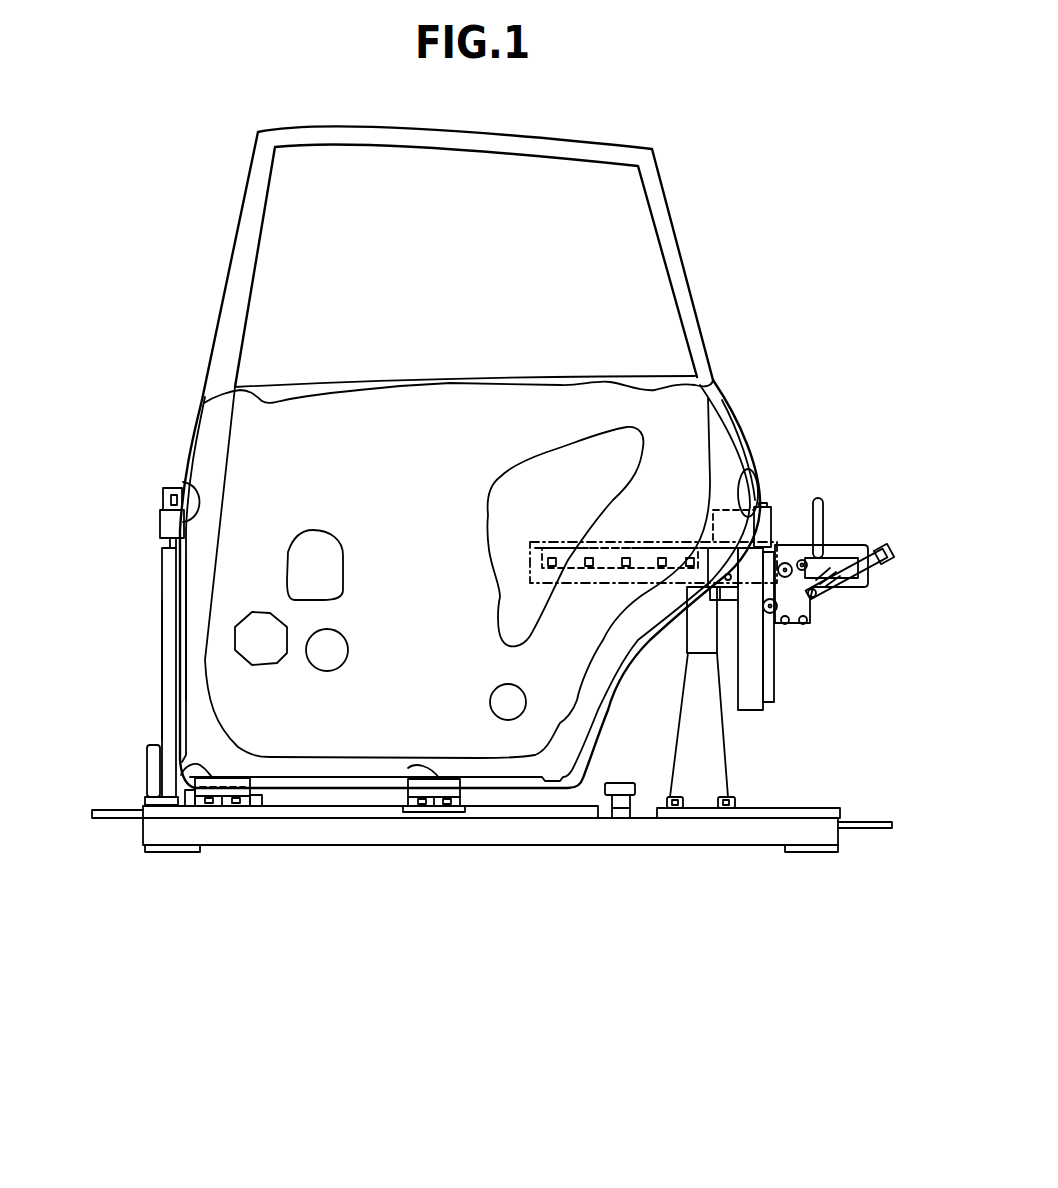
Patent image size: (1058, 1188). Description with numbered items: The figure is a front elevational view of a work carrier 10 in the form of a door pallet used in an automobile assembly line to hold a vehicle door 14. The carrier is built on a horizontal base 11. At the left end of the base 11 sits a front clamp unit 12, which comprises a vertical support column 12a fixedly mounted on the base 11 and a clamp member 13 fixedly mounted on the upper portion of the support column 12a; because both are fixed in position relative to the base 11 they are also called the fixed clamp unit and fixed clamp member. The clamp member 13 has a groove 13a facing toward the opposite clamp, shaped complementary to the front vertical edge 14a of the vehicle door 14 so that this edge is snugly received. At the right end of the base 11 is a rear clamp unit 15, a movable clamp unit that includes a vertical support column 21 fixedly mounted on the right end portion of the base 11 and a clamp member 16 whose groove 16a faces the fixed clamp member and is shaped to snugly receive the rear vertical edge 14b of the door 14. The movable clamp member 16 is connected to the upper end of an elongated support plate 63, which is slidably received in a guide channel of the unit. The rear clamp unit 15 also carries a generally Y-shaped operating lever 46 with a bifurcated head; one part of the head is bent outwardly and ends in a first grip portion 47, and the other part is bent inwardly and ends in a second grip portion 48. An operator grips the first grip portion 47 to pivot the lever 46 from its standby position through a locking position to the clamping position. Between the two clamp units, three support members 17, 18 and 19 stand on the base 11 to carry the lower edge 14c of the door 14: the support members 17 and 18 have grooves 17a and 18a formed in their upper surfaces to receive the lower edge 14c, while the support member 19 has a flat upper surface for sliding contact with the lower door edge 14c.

The work carrier 10 is at (528, 917).
The base 11 is at (468, 837).
The front clamp unit 12 is at (157, 712).
The support column 12a is at (163, 683).
The clamp member 13 is at (160, 524).
The groove 13a is at (183, 482).
The vehicle door 14 is at (683, 285).
The front vertical edge 14a is at (172, 588).
The rear vertical edge 14b is at (733, 418).
The lower edge 14c is at (307, 780).
The rear clamp unit 15 is at (812, 655).
The clamp member 16 is at (775, 520).
The groove 16a is at (749, 468).
The support member 17 is at (230, 803).
The groove 17a is at (186, 770).
The support member 18 is at (445, 806).
The groove 18a is at (408, 765).
The support member 19 is at (603, 790).
The support column 21 is at (717, 782).
The operating lever 46 is at (845, 545).
The first grip portion 47 is at (820, 513).
The second grip portion 48 is at (888, 560).
The support plate 63 is at (755, 708).